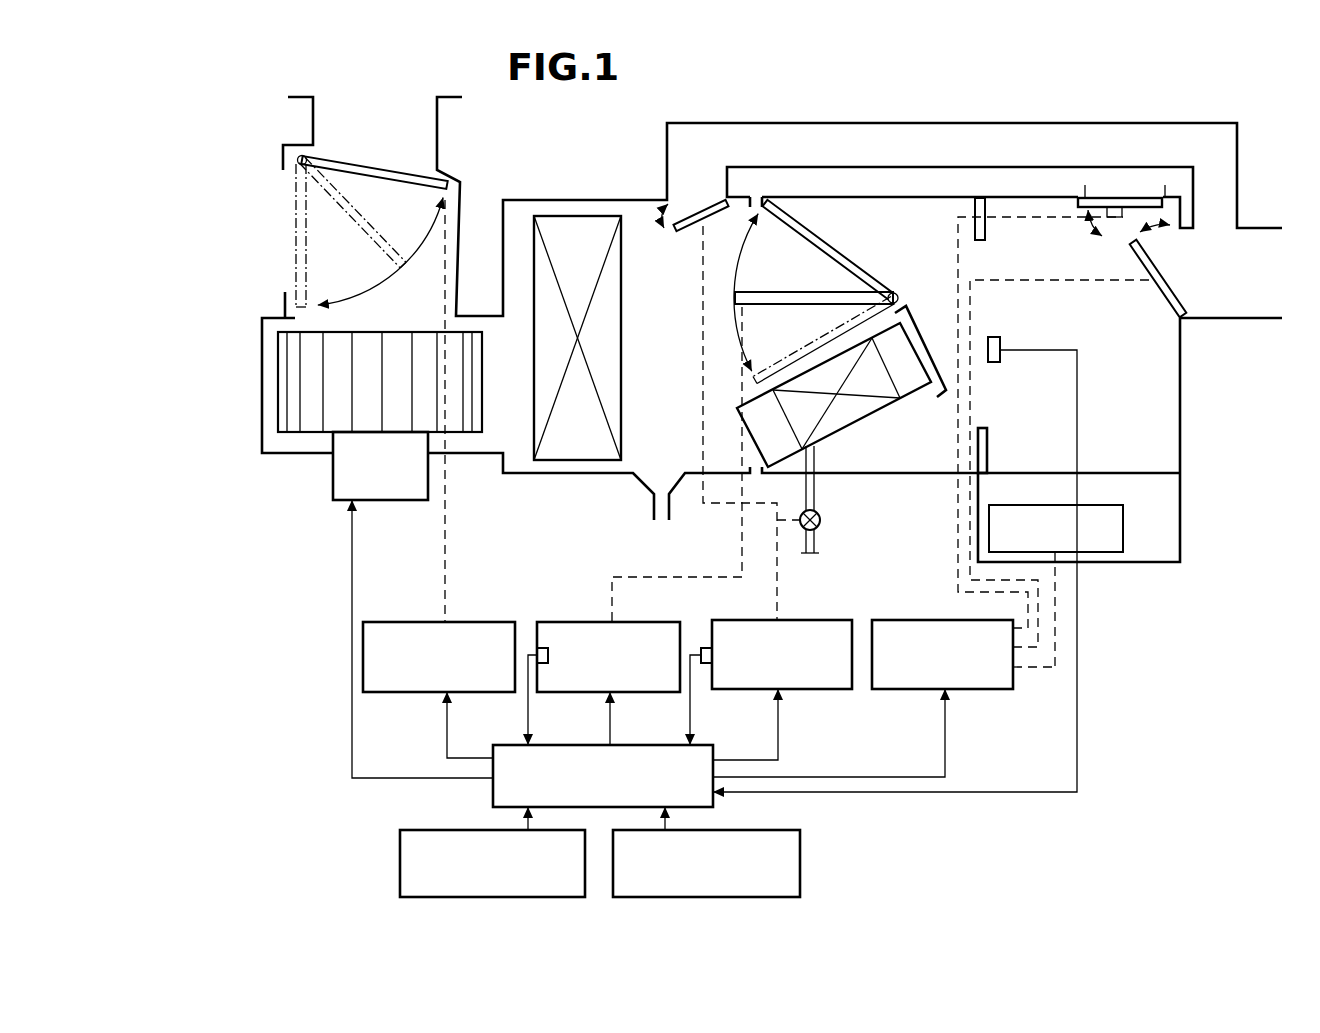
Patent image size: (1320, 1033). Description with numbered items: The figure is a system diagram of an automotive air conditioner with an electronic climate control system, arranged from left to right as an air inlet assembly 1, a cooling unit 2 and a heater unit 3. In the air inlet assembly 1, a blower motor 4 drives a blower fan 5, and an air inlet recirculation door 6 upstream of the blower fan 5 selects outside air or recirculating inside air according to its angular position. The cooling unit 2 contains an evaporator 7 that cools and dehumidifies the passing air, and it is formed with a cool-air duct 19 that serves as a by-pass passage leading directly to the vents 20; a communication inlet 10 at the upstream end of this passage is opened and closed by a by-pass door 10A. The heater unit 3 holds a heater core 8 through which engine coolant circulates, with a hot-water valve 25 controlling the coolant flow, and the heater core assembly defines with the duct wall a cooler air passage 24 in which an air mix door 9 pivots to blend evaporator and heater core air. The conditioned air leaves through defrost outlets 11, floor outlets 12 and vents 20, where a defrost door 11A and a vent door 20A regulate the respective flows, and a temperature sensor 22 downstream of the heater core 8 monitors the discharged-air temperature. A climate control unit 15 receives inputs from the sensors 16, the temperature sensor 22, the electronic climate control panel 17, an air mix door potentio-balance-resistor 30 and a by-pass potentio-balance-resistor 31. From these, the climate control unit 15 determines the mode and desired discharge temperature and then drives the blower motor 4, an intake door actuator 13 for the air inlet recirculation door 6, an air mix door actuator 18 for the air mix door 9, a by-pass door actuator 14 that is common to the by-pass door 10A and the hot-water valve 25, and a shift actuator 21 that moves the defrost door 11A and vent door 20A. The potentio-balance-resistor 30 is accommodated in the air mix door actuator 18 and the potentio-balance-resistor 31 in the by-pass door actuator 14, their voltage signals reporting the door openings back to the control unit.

The air inlet assembly 1 is at (318, 462).
The cooling unit 2 is at (573, 482).
The heater unit 3 is at (893, 487).
The blower motor 4 is at (387, 490).
The blower fan 5 is at (455, 418).
The air inlet recirculation door 6 is at (393, 173).
The evaporator 7 is at (580, 212).
The heater core 8 is at (858, 410).
The air mix door 9 is at (817, 297).
The communication inlet 10 is at (690, 205).
The by-pass door 10A is at (712, 200).
The defrost outlets 11 is at (1098, 185).
The defrost door 11A is at (1143, 197).
The floor outlets 12 is at (1118, 524).
The intake door actuator 13 is at (422, 693).
The by-pass door actuator 14 is at (825, 620).
The climate control unit 15 is at (580, 718).
The sensors 16 is at (400, 858).
The electronic climate control panel 17 is at (800, 857).
The air mix door actuator 18 is at (660, 692).
The cool-air duct 19 is at (878, 132).
The vents 20 is at (1242, 318).
The vent door 20A is at (1165, 297).
The shift actuator 21 is at (980, 690).
The temperature sensor 22 is at (1002, 340).
The cooler air passage 24 is at (785, 262).
The hot-water valve 25 is at (821, 518).
The air mix door potentio-balance-resistor 30 is at (537, 652).
The by-pass potentio-balance-resistor 31 is at (703, 640).